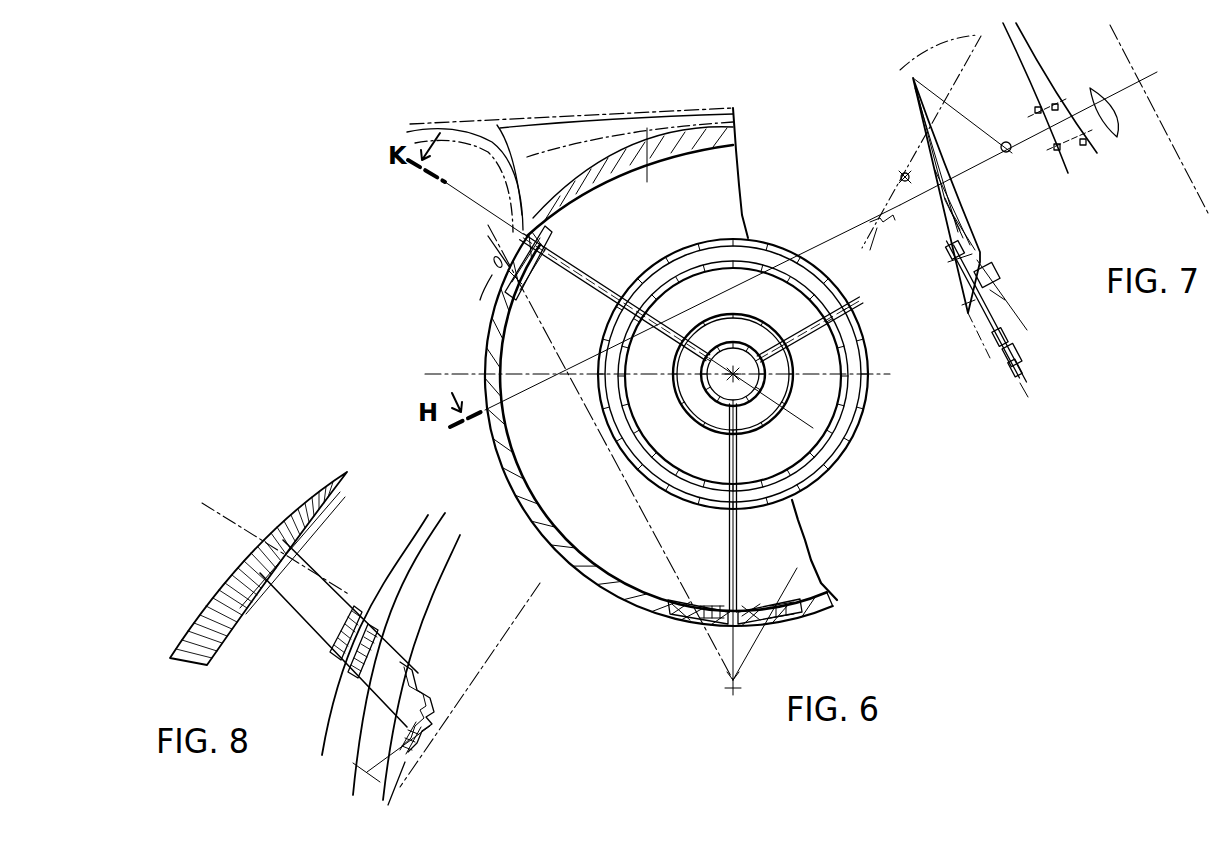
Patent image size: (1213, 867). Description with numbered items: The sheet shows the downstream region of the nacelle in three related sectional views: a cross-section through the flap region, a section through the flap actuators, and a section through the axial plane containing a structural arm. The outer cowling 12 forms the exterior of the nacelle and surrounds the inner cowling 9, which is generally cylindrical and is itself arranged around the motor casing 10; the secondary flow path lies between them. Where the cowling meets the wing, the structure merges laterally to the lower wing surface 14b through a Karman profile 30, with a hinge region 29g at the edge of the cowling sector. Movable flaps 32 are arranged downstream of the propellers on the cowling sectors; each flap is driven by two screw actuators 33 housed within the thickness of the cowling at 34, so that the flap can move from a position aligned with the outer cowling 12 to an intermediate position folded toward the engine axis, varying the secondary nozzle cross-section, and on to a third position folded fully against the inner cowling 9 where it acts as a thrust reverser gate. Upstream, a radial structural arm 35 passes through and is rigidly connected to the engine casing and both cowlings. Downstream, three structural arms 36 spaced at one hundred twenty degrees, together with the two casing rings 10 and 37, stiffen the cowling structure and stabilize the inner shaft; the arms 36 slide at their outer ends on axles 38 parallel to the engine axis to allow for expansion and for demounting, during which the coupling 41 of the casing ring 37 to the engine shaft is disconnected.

In FIG. 7, the inner cowling 9 is at (1019, 80).
In FIG. 8, the inner cowling 9 is at (337, 617).
In FIG. 8, the motor casing 10 is at (368, 650).
In FIG. 8, the outer cowling 12 is at (222, 588).
In FIG. 6, the lower wing surface 14b is at (453, 123).
In FIG. 6, the tongue edge element 29g is at (502, 253).
In FIG. 6, the Karman profile 30 is at (512, 167).
In FIG. 6, the movable flap 32 is at (505, 458).
In FIG. 7, the movable flap 32 is at (908, 166).
In FIG. 7, the screw actuator 33 is at (992, 262).
In FIG. 6, the actuator location in cowling thickness 34 is at (527, 278).
In FIG. 8, the radial structural arm 35 is at (310, 600).
In FIG. 6, the structural arm 36 is at (596, 285).
In FIG. 8, the casing ring 37 is at (434, 705).
In FIG. 8, the axle 38 is at (284, 518).
In FIG. 8, the coupling 41 is at (427, 743).